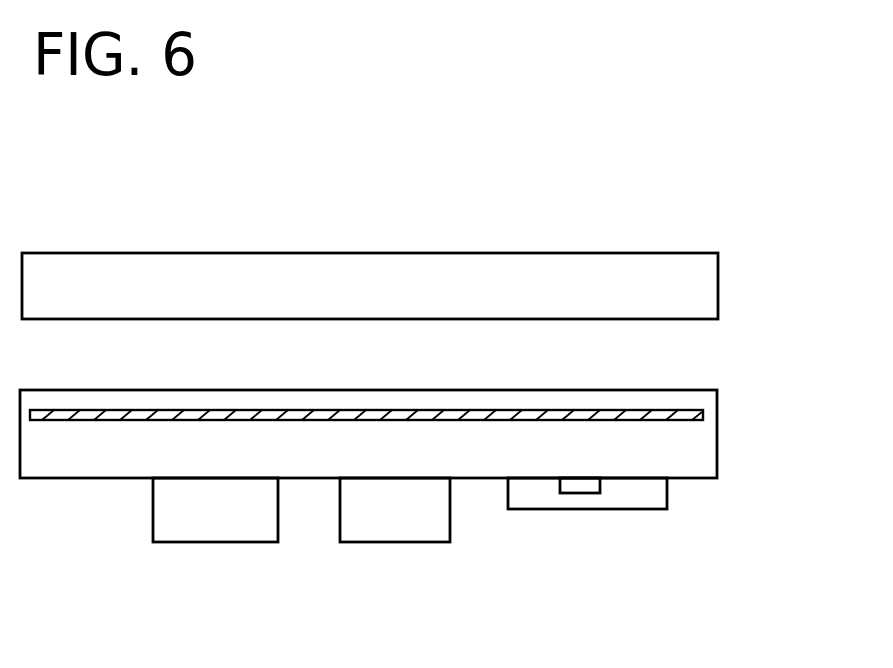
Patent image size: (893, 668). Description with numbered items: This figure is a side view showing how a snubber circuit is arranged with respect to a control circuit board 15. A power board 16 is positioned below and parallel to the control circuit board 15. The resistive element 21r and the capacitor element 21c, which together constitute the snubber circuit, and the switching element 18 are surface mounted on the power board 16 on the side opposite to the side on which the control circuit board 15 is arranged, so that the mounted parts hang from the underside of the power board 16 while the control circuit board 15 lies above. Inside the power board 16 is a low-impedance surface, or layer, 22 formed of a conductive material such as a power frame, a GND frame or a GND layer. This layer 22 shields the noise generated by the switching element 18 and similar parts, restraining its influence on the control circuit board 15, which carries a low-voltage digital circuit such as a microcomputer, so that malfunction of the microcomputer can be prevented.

The control circuit board 15 is at (718, 291).
The power board 16 is at (700, 452).
The surface (layer) having low impedance 22 is at (665, 411).
The switching element 18 is at (362, 537).
The capacitor element 21c is at (640, 497).
The resistive element 21r is at (583, 495).